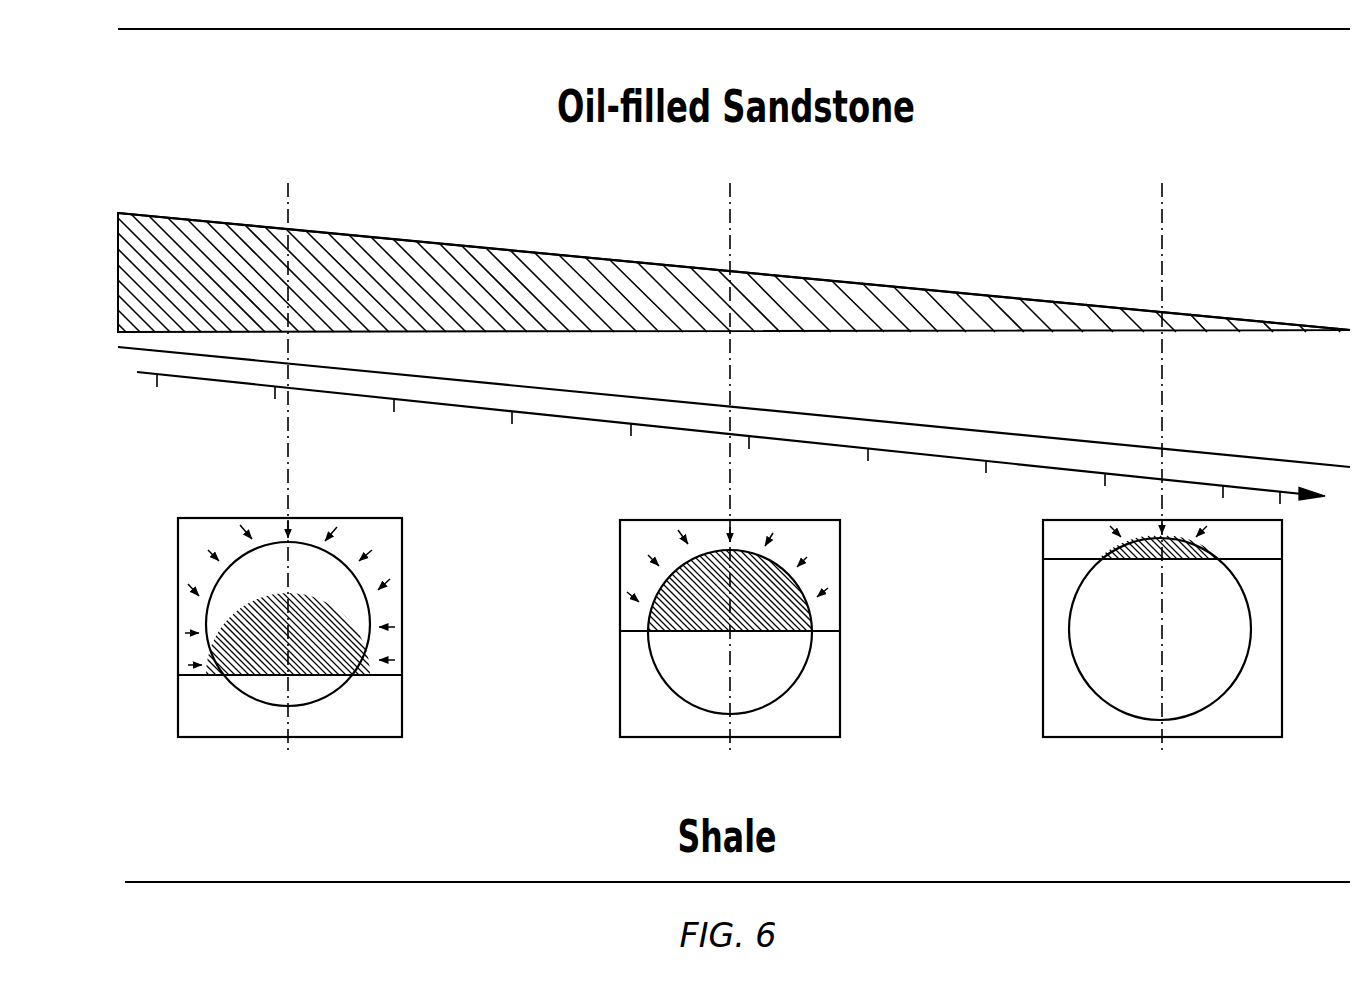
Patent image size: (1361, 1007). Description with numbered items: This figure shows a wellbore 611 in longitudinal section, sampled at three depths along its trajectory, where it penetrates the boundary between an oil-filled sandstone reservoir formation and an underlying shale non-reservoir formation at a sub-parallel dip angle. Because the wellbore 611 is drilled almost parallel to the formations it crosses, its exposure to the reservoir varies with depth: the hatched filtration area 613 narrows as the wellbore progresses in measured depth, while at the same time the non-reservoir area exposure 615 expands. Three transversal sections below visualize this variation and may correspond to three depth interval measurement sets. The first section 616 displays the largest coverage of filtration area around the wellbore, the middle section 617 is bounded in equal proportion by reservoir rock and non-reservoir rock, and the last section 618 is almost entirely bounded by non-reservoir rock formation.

The wellbore 611 is at (177, 216).
The filtration area 613 is at (772, 301).
The non-reservoir area exposure 615 is at (898, 380).
The first section 616 is at (349, 748).
The middle section 617 is at (784, 750).
The last section 618 is at (1235, 745).